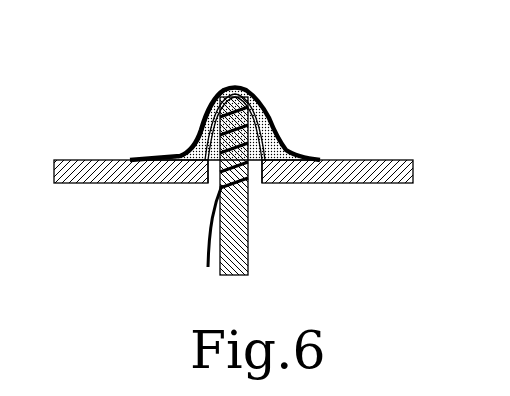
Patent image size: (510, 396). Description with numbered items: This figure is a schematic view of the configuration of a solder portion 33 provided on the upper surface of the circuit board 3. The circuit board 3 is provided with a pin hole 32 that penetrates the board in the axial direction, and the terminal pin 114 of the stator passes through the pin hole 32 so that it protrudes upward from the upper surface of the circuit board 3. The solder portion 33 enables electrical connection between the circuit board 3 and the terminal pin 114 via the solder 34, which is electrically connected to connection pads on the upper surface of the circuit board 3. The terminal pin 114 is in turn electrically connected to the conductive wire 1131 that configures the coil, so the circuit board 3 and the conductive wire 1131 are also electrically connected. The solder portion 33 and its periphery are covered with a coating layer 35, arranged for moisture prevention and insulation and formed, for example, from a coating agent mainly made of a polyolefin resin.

The circuit board 3 is at (397, 165).
The pin hole 32 is at (260, 188).
The solder portion 33 is at (259, 90).
The solder 34 is at (202, 128).
The coating layer 35 is at (274, 122).
The terminal pin 114 is at (250, 238).
The conductive wire 1131 is at (205, 244).